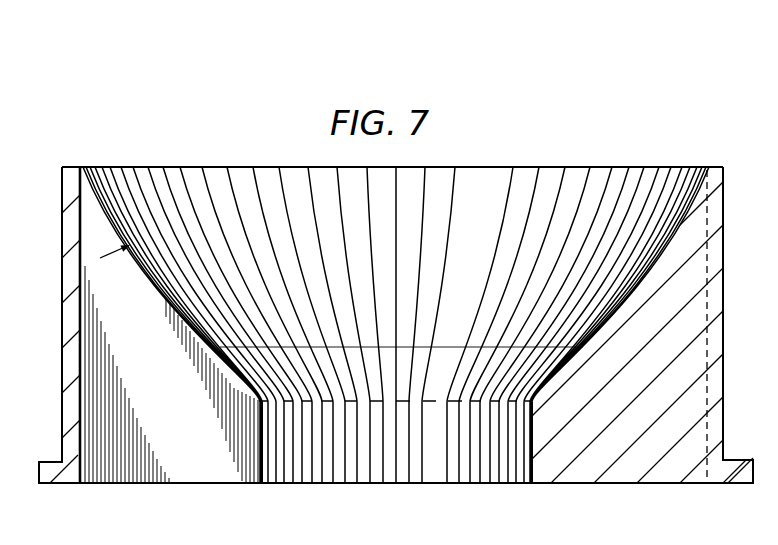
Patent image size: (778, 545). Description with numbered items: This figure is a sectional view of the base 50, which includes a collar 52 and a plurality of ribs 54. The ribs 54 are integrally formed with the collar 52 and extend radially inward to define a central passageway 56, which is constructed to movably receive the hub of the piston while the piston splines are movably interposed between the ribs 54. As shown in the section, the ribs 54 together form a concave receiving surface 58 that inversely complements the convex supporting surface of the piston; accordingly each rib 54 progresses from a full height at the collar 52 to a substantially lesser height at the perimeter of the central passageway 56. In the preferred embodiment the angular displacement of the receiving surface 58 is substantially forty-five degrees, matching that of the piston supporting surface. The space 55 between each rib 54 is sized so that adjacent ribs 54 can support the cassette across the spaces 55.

The base 50 is at (667, 57).
The collar 52 is at (42, 462).
The ribs 54 is at (290, 166).
The space between each rib 55 is at (496, 174).
The central passageway 56 is at (340, 463).
The receiving surface 58 is at (696, 172).